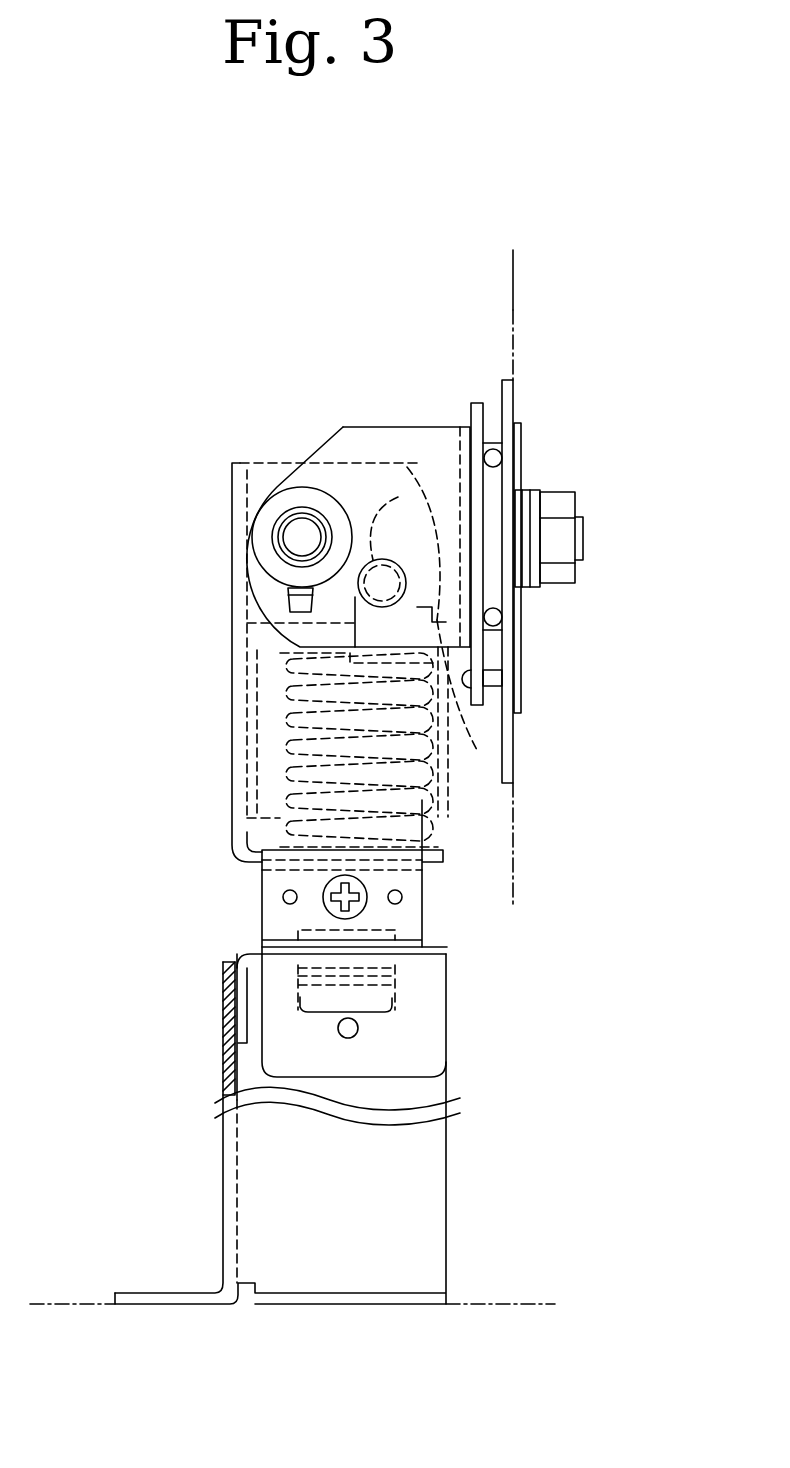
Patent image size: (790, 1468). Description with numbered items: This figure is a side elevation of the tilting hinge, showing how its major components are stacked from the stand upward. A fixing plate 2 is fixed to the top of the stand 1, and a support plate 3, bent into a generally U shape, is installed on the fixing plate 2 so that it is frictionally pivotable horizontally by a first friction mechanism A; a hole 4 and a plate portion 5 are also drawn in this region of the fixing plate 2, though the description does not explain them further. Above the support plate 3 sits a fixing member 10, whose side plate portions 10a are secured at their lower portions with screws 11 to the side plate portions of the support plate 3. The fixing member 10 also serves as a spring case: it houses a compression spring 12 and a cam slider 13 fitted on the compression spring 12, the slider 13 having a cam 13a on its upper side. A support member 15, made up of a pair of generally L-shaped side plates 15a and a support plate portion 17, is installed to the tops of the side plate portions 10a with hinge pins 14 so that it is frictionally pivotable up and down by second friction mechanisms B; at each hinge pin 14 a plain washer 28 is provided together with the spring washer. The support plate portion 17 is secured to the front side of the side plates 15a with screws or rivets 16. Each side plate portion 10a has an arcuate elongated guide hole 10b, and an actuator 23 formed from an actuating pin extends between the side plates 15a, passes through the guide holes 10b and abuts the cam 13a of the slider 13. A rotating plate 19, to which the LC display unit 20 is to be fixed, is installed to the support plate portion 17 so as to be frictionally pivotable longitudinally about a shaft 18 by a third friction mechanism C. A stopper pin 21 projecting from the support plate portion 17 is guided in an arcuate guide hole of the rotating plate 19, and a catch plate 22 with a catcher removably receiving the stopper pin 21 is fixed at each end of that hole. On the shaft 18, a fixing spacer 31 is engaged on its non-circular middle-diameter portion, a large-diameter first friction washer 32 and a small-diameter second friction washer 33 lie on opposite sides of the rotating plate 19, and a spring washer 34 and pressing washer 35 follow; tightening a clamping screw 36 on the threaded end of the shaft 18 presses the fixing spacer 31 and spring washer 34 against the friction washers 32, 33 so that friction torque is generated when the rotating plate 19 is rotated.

The stand 1 is at (447, 1160).
The fixing plate 2 is at (448, 997).
The support plate 3 is at (422, 945).
The positioning hole 4 is at (369, 1013).
The plate portion 5 is at (262, 947).
The fixing member 10 is at (231, 797).
The side plate portion 10a is at (250, 735).
The arcuate elongated guide hole 10b is at (377, 508).
The screw 11 is at (323, 895).
The compression spring 12 is at (280, 662).
The cam slider 13 is at (252, 622).
The cam 13a is at (466, 701).
The hinge pin 14 is at (303, 540).
The support member 15 is at (387, 418).
The side plate 15a is at (355, 435).
The screw or rivet 16 is at (490, 445).
The support plate portion 17 is at (477, 403).
The shaft 18 is at (583, 537).
The rotating plate 19 is at (514, 760).
The LC display unit 20 is at (515, 310).
The stopper pin 21 is at (523, 715).
The catch plate 22 is at (490, 685).
The actuator 23 is at (387, 577).
The plain washer 28 is at (262, 520).
The fixing spacer 31 is at (490, 572).
The first friction washer 32 is at (497, 598).
The second friction washer 33 is at (516, 488).
The spring washer 34 is at (551, 470).
The pressing washer 35 is at (545, 593).
The clamping screw 36 is at (565, 505).
The first friction mechanism A is at (301, 999).
The second friction mechanism B is at (278, 488).
The third friction mechanism C is at (555, 470).